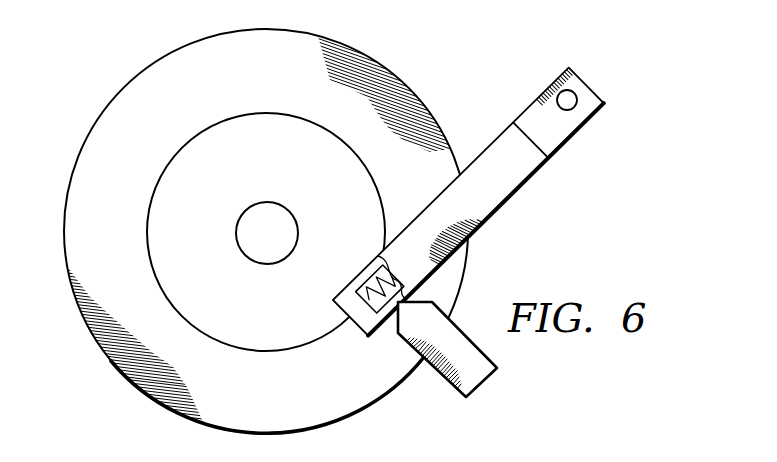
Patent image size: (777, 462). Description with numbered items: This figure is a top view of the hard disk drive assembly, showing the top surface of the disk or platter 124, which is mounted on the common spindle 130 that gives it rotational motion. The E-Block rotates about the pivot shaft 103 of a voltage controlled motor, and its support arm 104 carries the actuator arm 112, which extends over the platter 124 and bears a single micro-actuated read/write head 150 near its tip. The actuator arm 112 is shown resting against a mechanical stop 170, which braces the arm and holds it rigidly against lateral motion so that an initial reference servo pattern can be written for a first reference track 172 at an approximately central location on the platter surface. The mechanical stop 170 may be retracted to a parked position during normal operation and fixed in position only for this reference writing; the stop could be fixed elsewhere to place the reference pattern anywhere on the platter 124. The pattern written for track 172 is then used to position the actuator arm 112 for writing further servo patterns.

The disk 124 is at (105, 118).
The track 172 is at (267, 112).
The spindle 130 is at (267, 201).
The actuator arm 112 is at (513, 180).
The support arm 104 is at (565, 125).
The pivot shaft 103 is at (572, 94).
The read/write head 150 is at (365, 305).
The mechanical stop 170 is at (483, 386).